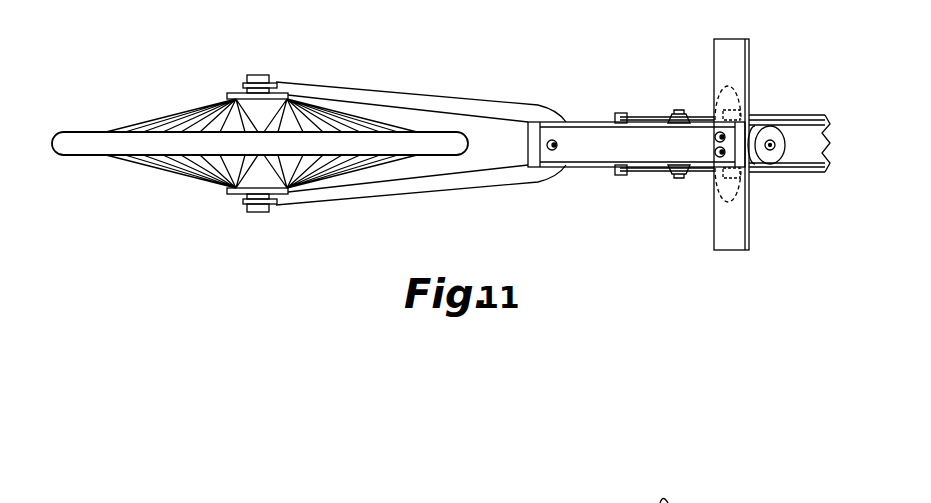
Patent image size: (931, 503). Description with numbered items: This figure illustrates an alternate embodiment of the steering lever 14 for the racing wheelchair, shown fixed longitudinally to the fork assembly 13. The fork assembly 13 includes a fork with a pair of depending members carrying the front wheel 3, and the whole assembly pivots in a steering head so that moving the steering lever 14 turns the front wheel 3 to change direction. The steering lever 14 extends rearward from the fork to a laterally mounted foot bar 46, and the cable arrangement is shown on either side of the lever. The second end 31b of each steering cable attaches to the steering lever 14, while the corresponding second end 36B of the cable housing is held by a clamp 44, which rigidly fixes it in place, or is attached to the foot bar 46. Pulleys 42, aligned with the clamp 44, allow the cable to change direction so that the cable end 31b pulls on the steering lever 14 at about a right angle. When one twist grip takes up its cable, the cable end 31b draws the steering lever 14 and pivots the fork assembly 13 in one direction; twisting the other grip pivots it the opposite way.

The front wheel 3 is at (86, 156).
The fork assembly 13 is at (487, 100).
The steering lever 14 is at (603, 155).
The second end of cable 31b is at (620, 113).
The pulleys 42 is at (677, 113).
The clamp 44 is at (714, 88).
The second end of cable housing 36B is at (762, 114).
The foot bar 46 is at (740, 50).